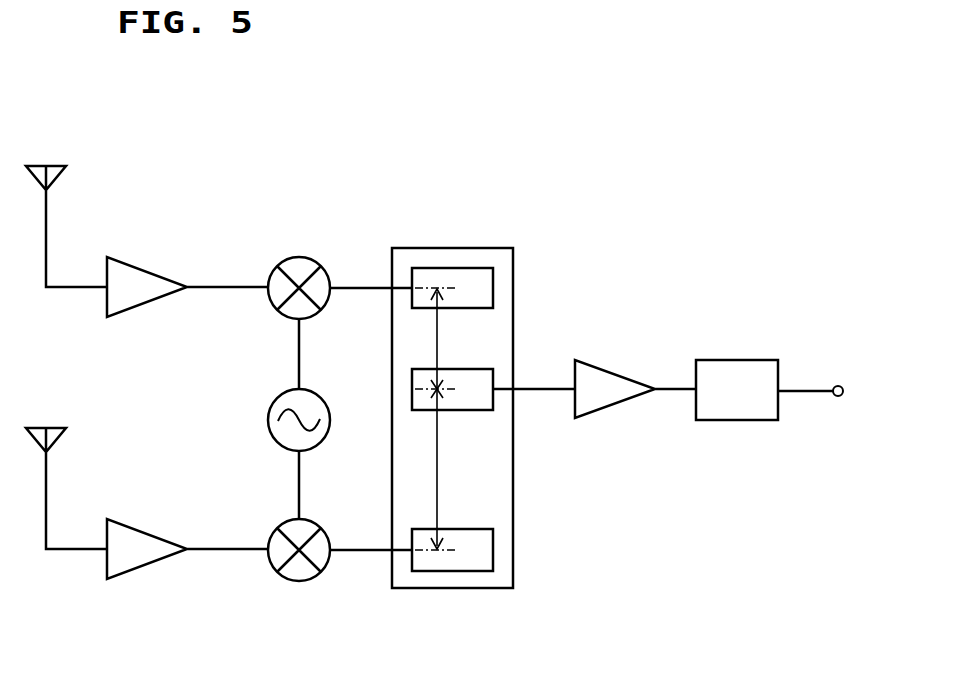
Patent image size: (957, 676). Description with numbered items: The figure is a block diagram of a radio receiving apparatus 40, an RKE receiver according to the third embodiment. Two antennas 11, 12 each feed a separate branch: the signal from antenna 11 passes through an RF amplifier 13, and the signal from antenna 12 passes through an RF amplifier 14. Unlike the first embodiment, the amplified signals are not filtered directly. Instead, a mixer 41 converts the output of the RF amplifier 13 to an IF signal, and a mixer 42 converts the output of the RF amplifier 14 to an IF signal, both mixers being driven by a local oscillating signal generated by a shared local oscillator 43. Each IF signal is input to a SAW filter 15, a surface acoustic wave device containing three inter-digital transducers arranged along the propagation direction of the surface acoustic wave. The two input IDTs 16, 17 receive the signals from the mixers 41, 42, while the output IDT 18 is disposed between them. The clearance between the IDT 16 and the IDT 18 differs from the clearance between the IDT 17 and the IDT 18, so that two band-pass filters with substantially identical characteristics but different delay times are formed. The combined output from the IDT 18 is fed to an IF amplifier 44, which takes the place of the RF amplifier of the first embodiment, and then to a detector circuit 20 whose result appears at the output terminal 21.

The antenna 11 is at (50, 168).
The antenna 12 is at (50, 430).
The RF amplifier 13 is at (137, 288).
The RF amplifier 14 is at (137, 549).
The SAW filter 15 is at (514, 394).
The inter-digital transducer 16 is at (472, 288).
The inter-digital transducer 17 is at (478, 560).
The inter-digital transducer 18 is at (473, 400).
The detector circuit 20 is at (732, 375).
The output terminal 21 is at (838, 382).
The radio receiving apparatus 40 is at (660, 172).
The mixer 41 is at (300, 262).
The mixer 42 is at (300, 580).
The local oscillator 43 is at (268, 400).
The IF amplifier 44 is at (605, 390).